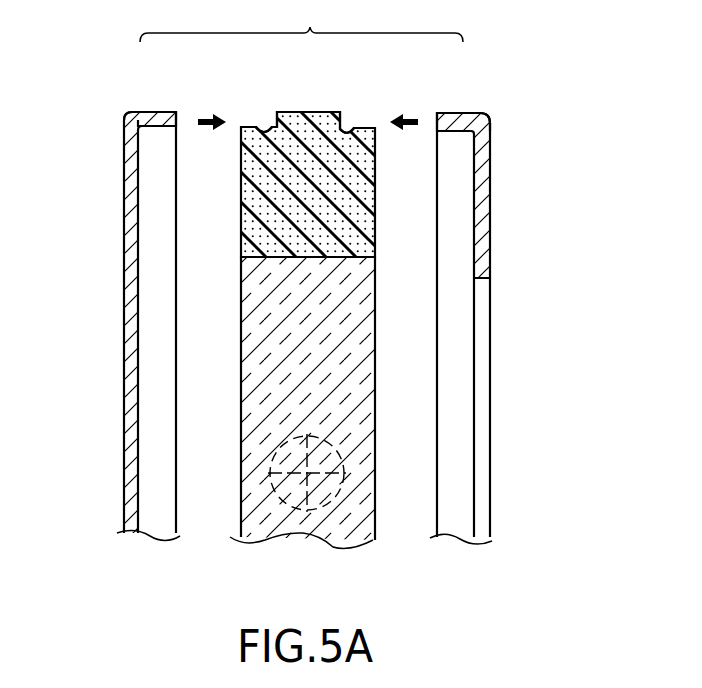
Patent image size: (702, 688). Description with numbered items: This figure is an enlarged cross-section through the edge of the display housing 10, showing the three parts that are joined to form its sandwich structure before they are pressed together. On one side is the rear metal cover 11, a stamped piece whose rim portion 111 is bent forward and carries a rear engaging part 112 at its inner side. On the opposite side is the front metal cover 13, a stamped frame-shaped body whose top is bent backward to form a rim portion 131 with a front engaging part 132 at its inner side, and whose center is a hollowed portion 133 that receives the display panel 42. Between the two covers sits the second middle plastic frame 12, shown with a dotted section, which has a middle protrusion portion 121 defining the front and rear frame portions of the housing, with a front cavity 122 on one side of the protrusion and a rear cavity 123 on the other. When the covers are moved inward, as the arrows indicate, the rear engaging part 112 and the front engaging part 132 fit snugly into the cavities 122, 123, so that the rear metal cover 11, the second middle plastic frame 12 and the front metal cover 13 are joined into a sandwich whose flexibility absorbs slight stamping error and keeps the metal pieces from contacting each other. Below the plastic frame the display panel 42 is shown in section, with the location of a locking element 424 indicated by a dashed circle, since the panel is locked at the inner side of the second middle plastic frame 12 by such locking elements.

The display housing 10 is at (301, 23).
The rear metal cover 11 is at (110, 300).
The rim portion 111 is at (155, 112).
The rear engaging part 112 is at (172, 127).
The second middle plastic frame 12 is at (316, 154).
The middle protrusion portion 121 is at (300, 112).
The front cavity 122 is at (252, 127).
The rear cavity 123 is at (355, 128).
The front metal cover 13 is at (499, 302).
The rim portion 131 is at (456, 112).
The front engaging part 132 is at (442, 131).
The hollowed portion 133 is at (474, 364).
The display panel 42 is at (321, 395).
The locking element 424 is at (331, 543).